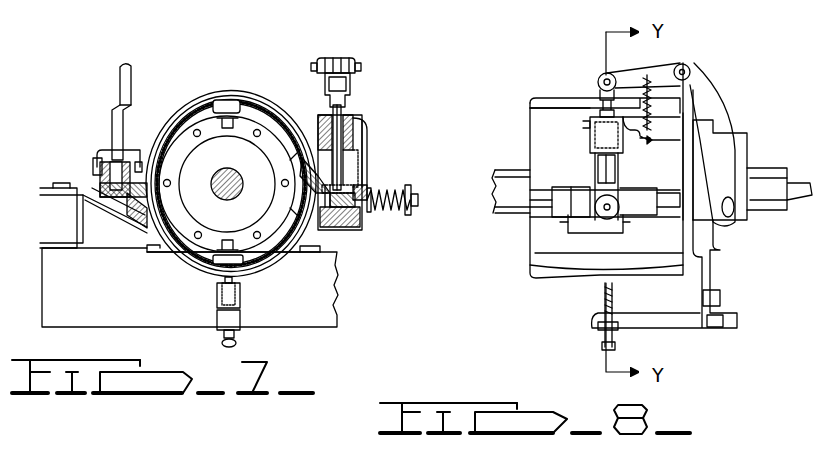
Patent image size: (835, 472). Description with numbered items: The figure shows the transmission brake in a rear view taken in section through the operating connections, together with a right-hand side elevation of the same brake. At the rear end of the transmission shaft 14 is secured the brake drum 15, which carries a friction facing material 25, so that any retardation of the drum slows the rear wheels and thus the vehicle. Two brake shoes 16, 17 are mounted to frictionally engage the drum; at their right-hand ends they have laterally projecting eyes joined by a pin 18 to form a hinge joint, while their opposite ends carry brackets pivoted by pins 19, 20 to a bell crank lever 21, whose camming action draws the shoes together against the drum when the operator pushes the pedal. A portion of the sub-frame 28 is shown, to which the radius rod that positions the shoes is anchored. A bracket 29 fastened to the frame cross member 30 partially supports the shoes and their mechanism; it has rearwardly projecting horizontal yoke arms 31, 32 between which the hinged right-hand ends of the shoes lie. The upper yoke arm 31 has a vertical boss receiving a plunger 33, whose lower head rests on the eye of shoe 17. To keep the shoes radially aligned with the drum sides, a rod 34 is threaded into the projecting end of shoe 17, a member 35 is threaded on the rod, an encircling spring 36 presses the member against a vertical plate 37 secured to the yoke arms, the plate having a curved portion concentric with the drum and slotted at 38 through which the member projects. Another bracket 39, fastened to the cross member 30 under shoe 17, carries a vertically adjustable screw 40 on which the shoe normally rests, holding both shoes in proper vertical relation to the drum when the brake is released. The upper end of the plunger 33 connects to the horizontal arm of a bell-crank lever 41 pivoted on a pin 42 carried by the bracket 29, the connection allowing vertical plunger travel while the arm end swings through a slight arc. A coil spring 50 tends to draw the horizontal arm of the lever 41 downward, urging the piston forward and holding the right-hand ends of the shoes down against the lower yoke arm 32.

In FIG. 7, the transmission shaft 14 is at (212, 182).
In FIG. 8, the transmission shaft 14 is at (507, 177).
In FIG. 7, the brake drum 15 is at (255, 115).
In FIG. 7, the brake shoe 16 is at (233, 89).
In FIG. 8, the brake shoe 16 is at (530, 103).
In FIG. 7, the brake shoe 17 is at (187, 267).
In FIG. 8, the brake shoe 17 is at (535, 253).
In FIG. 7, the pin 18 is at (313, 265).
In FIG. 8, the pin 18 is at (545, 208).
In FIG. 7, the pin 19 is at (100, 152).
In FIG. 7, the pin 20 is at (97, 175).
In FIG. 7, the bell crank lever 21 is at (118, 100).
In FIG. 7, the friction facing material 25 is at (187, 115).
In FIG. 7, the sub-frame 28 is at (62, 247).
In FIG. 8, the bracket 29 is at (743, 135).
In FIG. 7, the frame cross member 30 is at (113, 323).
In FIG. 8, the frame cross member 30 is at (710, 277).
In FIG. 7, the yoke arm 31 is at (360, 113).
In FIG. 8, the yoke arm 31 is at (590, 123).
In FIG. 7, the yoke arm 32 is at (340, 222).
In FIG. 8, the yoke arm 32 is at (568, 226).
In FIG. 7, the plunger 33 is at (343, 110).
In FIG. 8, the plunger 33 is at (603, 114).
In FIG. 7, the rod 34 is at (413, 207).
In FIG. 8, the rod 34 is at (605, 219).
In FIG. 7, the member 35 is at (356, 187).
In FIG. 7, the spring 36 is at (395, 195).
In FIG. 8, the spring 36 is at (590, 193).
In FIG. 7, the vertical plate 37 is at (365, 137).
In FIG. 7, the slot 38 is at (360, 160).
In FIG. 8, the slot 38 is at (615, 162).
In FIG. 7, the bracket 39 is at (242, 317).
In FIG. 8, the bracket 39 is at (665, 310).
In FIG. 7, the vertically adjustable screw 40 is at (237, 343).
In FIG. 8, the vertically adjustable screw 40 is at (601, 346).
In FIG. 7, the bell-crank lever 41 is at (333, 62).
In FIG. 8, the bell-crank lever 41 is at (710, 80).
In FIG. 7, the pin 42 is at (359, 69).
In FIG. 8, the pin 42 is at (688, 66).
In FIG. 8, the coil spring 50 is at (652, 113).